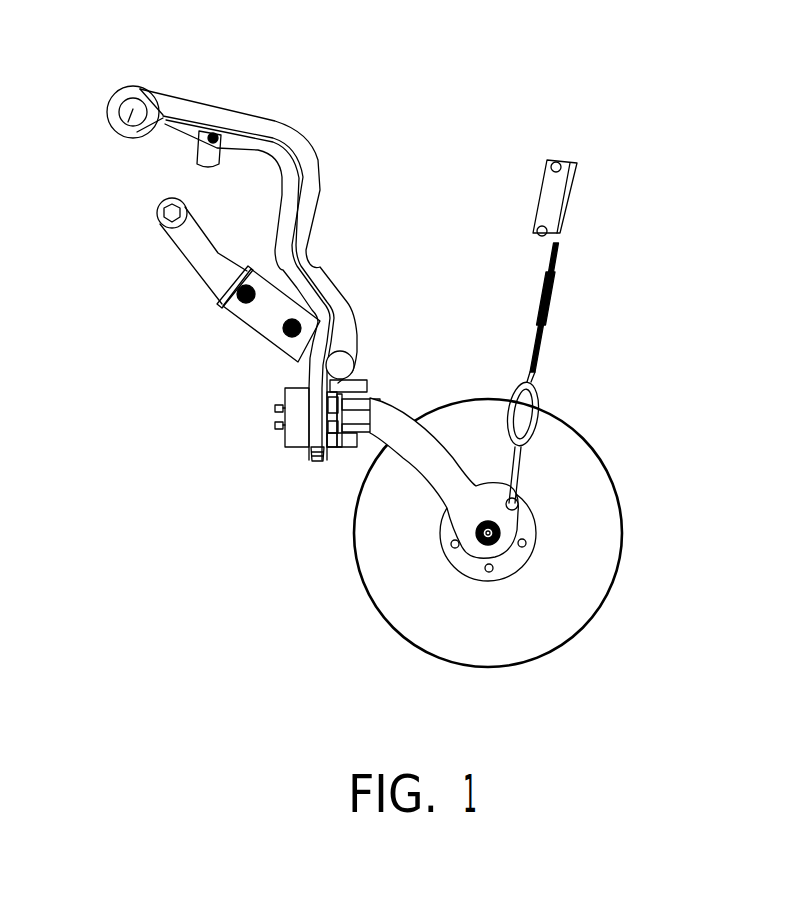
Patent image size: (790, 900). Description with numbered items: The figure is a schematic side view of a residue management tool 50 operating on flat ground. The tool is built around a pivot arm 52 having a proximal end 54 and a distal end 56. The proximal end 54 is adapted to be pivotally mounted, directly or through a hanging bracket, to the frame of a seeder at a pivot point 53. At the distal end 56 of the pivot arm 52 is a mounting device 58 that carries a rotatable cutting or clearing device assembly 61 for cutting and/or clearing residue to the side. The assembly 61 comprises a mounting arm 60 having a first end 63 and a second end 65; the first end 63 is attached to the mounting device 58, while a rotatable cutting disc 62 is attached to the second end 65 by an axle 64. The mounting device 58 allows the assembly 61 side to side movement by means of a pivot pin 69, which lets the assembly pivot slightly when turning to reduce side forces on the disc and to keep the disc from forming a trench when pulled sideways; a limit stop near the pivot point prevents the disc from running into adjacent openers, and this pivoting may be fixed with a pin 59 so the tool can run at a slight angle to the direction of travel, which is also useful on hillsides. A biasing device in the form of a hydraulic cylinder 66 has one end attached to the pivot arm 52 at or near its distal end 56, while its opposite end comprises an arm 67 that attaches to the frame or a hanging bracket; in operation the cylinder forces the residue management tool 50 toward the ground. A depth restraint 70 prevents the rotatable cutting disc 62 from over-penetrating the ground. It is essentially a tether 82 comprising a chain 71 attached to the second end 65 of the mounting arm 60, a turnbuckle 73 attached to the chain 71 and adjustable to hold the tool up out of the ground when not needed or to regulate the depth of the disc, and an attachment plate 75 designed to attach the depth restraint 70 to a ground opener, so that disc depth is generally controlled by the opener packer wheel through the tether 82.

The residue management tool 50 is at (294, 639).
The pivot arm 52 is at (252, 124).
The pivot point 53 is at (126, 120).
The proximal end 54 is at (128, 87).
The distal end 56 is at (288, 440).
The mounting device 58 is at (365, 378).
The pin 59 is at (347, 455).
The mounting arm 60 is at (430, 453).
The rotatable cutting or clearing device assembly 61 is at (566, 656).
The rotatable cutting disc 62 is at (600, 482).
The first end 63 is at (380, 398).
The axle 64 is at (497, 541).
The second end 65 is at (484, 545).
The hydraulic cylinder 66 is at (250, 328).
The arm 67 is at (188, 251).
The pivot pin 69 is at (357, 386).
The depth restraint 70 is at (552, 359).
The chain 71 is at (540, 400).
The turnbuckle 73 is at (548, 338).
The attachment plate 75 is at (578, 200).
The tether 82 is at (551, 300).